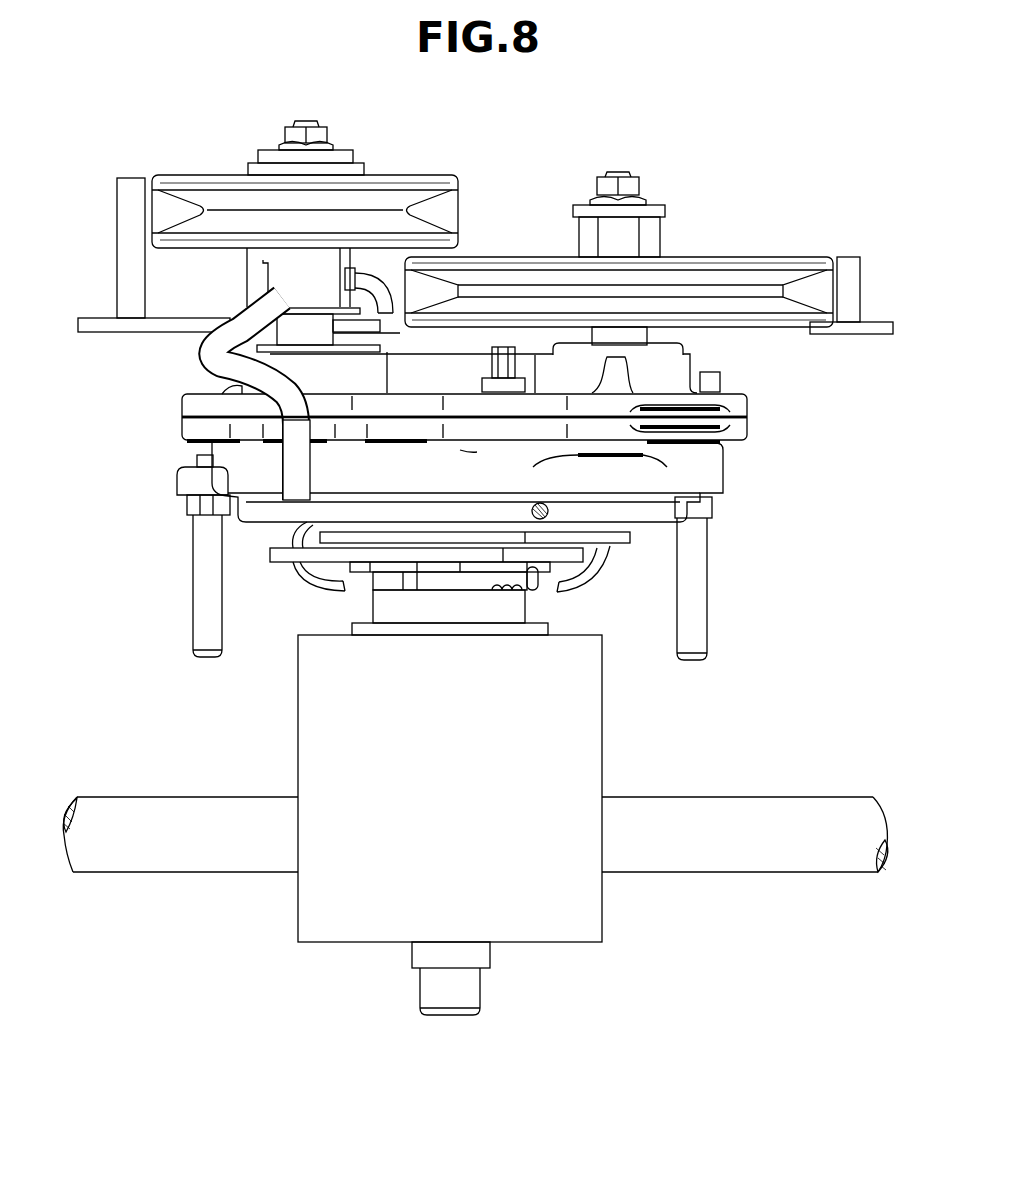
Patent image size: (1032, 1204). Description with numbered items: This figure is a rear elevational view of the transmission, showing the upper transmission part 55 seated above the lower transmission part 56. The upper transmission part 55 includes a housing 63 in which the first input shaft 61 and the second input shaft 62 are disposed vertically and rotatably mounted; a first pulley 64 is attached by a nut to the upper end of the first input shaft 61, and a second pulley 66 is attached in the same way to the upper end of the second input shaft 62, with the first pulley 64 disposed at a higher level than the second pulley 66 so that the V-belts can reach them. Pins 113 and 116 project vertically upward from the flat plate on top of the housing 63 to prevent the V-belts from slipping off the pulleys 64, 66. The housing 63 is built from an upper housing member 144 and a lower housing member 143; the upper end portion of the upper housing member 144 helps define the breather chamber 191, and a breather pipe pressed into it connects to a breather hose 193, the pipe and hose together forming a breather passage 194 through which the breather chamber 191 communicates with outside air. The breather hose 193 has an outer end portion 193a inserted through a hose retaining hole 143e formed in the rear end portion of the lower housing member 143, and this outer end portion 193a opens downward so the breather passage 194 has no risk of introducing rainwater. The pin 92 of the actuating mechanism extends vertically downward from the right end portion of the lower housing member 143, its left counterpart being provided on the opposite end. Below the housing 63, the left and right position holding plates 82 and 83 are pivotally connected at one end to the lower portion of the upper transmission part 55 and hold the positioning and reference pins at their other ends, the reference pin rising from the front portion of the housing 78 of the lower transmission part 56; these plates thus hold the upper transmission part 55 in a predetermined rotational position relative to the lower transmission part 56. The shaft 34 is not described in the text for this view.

The drive shaft 34 is at (741, 858).
The upper transmission part 55 is at (792, 440).
The lower transmission part 56 is at (580, 966).
The first input shaft 61 is at (305, 120).
The second input shaft 62 is at (620, 172).
The housing 63 is at (164, 401).
The first pulley 64 is at (201, 182).
The second pulley 66 is at (757, 262).
The housing 78 is at (348, 931).
The position holding plate 82 is at (286, 556).
The position holding plate 83 is at (622, 544).
The pin 92 is at (700, 612).
The pin 113 is at (131, 190).
The pin 116 is at (849, 262).
The lower housing member 143 is at (712, 468).
The hose retaining hole 143e is at (257, 450).
The upper housing member 144 is at (740, 400).
The breather chamber 191 is at (201, 603).
The breather hose 193 is at (257, 403).
The outer end portion 193a is at (257, 498).
The breather passage 194 is at (222, 298).